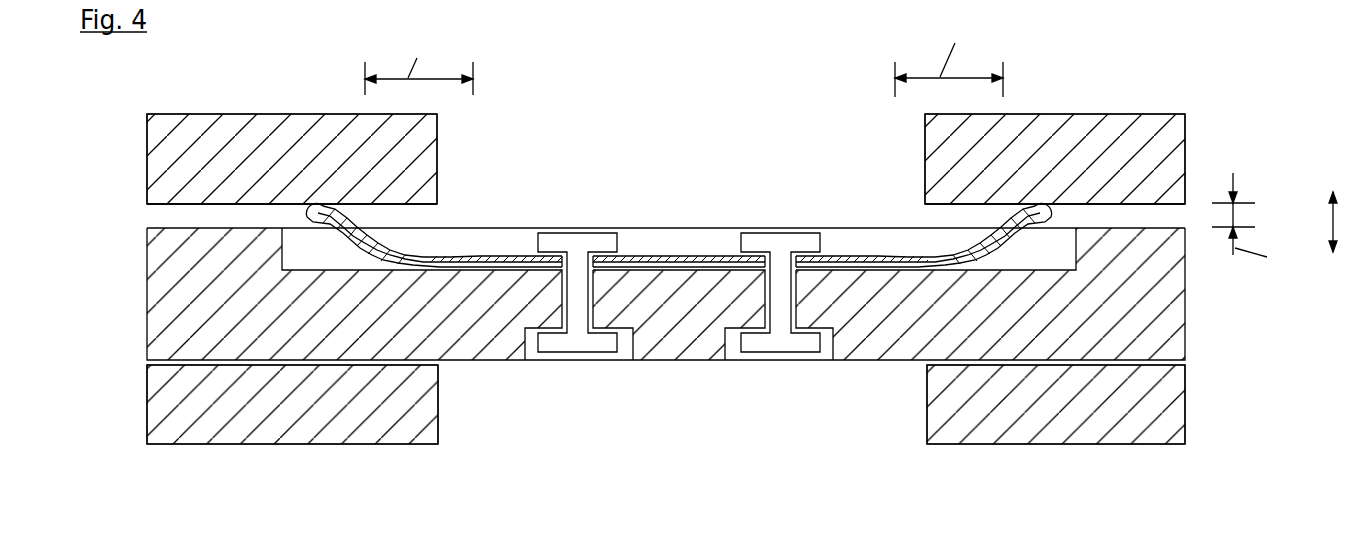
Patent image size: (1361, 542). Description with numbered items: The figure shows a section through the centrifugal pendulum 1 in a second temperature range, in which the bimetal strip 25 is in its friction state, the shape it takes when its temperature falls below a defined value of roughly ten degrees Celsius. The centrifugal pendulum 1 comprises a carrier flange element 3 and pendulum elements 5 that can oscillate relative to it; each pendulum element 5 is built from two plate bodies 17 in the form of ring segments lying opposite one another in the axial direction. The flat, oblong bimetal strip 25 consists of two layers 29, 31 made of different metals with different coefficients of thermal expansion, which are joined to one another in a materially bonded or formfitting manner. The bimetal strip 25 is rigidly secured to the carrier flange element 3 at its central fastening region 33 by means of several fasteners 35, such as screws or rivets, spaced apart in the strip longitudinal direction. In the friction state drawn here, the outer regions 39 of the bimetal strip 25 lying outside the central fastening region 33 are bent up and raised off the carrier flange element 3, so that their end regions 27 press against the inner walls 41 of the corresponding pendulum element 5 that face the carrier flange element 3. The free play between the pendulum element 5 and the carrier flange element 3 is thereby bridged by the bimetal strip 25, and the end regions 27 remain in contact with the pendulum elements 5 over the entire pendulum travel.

The centrifugal pendulum 1 is at (1238, 97).
The carrier flange element 3 is at (666, 240).
The pendulum element 5 is at (417, 145).
The plate body 17 is at (666, 240).
The bimetal strip 25 is at (679, 184).
The end region 27 is at (407, 216).
The first layer 29 is at (653, 256).
The second layer 31 is at (681, 262).
The central fastening region 33 is at (768, 105).
The fastener 35 is at (577, 243).
The outer region 39 is at (528, 137).
The inner wall 41 is at (165, 204).